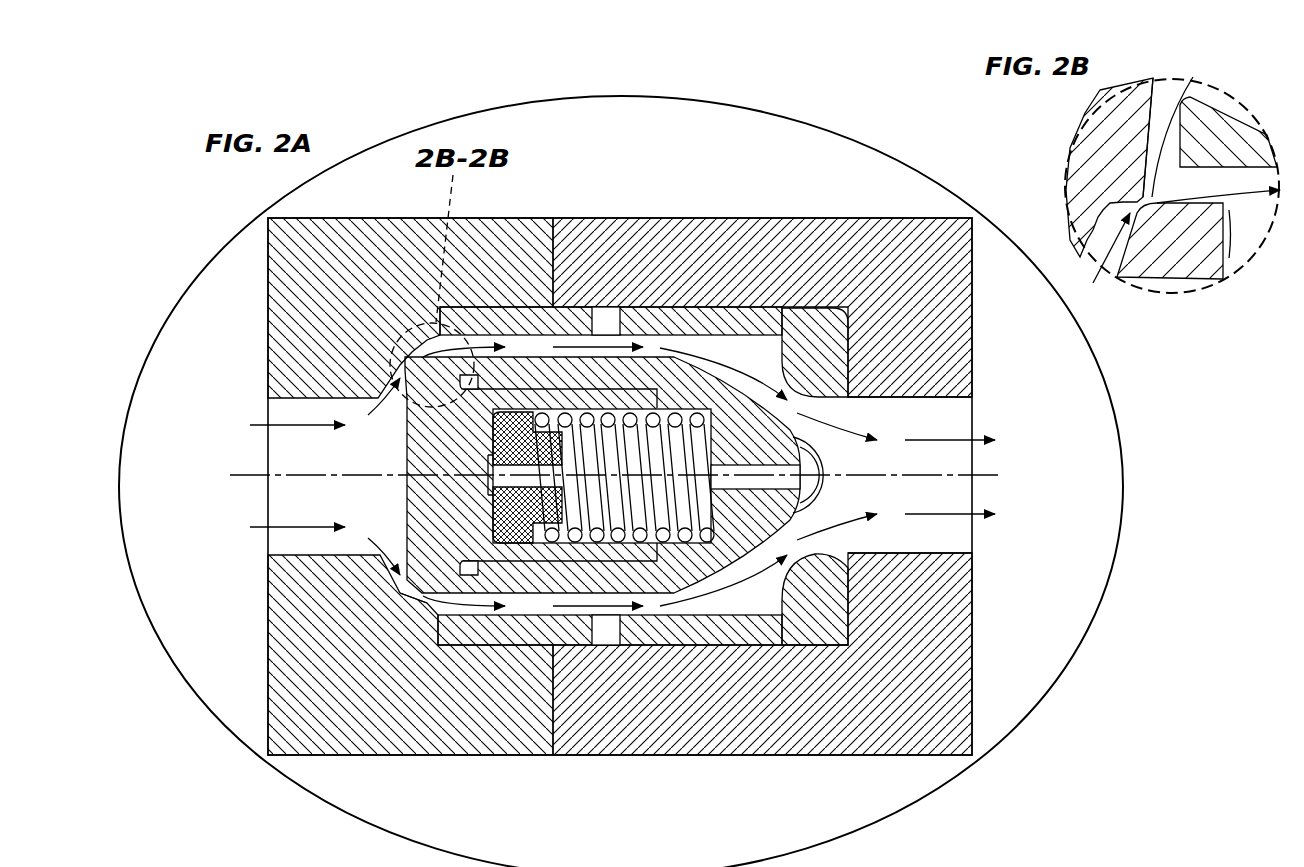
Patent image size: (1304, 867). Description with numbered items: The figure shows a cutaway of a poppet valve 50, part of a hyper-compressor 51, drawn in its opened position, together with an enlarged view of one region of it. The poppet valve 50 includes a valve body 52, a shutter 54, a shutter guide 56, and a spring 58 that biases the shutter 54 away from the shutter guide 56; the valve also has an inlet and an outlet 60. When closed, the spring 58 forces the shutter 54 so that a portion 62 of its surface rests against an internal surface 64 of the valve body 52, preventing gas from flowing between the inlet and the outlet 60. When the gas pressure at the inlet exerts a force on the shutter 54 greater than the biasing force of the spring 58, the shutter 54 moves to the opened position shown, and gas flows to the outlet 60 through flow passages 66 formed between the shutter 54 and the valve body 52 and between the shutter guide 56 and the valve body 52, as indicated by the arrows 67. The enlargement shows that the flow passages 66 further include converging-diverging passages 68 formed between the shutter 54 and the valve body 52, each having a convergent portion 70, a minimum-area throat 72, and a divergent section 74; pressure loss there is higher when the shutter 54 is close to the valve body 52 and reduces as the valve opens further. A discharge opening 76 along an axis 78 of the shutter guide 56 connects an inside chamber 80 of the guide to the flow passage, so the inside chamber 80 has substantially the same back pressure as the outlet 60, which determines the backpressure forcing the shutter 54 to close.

In FIG. 2A, the poppet valve 50 is at (773, 205).
In FIG. 2A, the hyper-compressor 51 is at (248, 228).
In FIG. 2A, the valve body 52 is at (620, 489).
In FIG. 2B, the valve body 52 is at (1247, 117).
In FIG. 2A, the shutter 54 is at (517, 533).
In FIG. 2B, the shutter 54 is at (1175, 240).
In FIG. 2A, the shutter guide 56 is at (567, 590).
In FIG. 2A, the spring 58 is at (300, 527).
In FIG. 2A, the outlet 60 is at (950, 540).
In FIG. 2A, the portion of a surface of the shutter 62 is at (427, 343).
In FIG. 2B, the portion of a surface of the shutter 62 is at (1218, 196).
In FIG. 2A, the internal surface of the valve body 64 is at (395, 385).
In FIG. 2B, the internal surface of the valve body 64 is at (1111, 248).
In FIG. 2A, the flow passages 66 is at (660, 343).
In FIG. 2A, the arrows 67 is at (603, 340).
In FIG. 2A, the converging-diverging passages 68 is at (428, 598).
In FIG. 2B, the converging-diverging passages 68 is at (1252, 195).
In FIG. 2B, the convergent portion 70 is at (1123, 198).
In FIG. 2B, the throat 72 is at (1143, 197).
In FIG. 2B, the divergent section 74 is at (1193, 77).
In FIG. 2A, the discharge opening 76 is at (752, 470).
In FIG. 2A, the axis 78 is at (985, 478).
In FIG. 2A, the inside chamber 80 is at (562, 545).